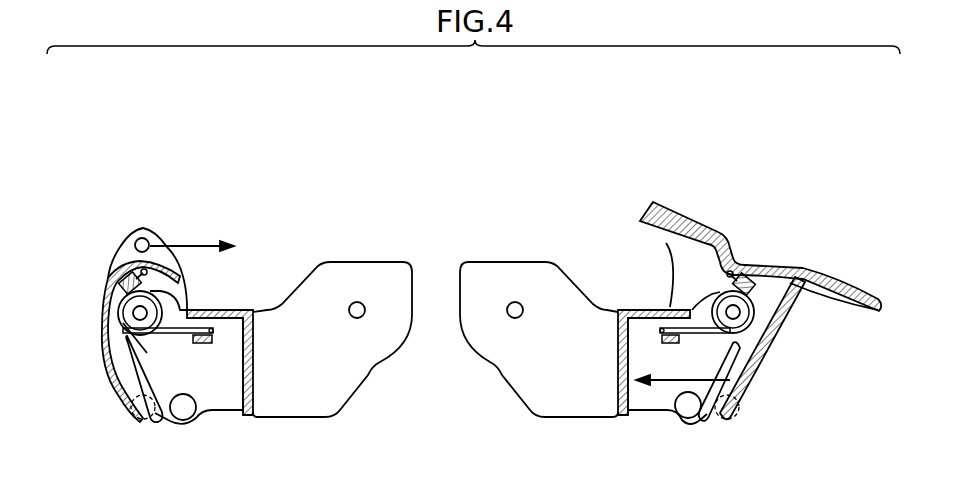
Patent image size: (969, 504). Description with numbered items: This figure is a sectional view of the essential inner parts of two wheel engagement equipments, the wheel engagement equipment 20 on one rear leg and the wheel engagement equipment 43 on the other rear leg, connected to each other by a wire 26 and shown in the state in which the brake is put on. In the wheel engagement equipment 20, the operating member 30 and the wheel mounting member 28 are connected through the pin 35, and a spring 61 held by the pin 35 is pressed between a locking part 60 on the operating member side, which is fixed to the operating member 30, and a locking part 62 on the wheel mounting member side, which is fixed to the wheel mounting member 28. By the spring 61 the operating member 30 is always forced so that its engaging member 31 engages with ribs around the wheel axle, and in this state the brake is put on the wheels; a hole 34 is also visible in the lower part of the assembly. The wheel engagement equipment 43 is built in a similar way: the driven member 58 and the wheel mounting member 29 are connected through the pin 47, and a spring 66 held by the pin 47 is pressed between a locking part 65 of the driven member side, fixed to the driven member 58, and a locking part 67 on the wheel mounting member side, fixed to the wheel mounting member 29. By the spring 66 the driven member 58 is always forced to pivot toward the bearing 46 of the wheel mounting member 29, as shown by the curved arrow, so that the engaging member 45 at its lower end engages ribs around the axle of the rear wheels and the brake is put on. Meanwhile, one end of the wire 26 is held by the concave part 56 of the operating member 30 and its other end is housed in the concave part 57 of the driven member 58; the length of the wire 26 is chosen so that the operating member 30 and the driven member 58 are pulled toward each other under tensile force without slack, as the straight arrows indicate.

The wheel engagement equipment 20 is at (816, 158).
The wire 26 is at (195, 242).
The wheel mounting member 28 is at (571, 395).
The wheel mounting member 29 is at (343, 373).
The operating member 30 is at (857, 282).
The engaging member 31 is at (695, 335).
The mounting hole 34 is at (688, 420).
The pin 35 is at (730, 307).
The wheel engagement equipment 43 is at (114, 158).
The engaging member 45 is at (188, 328).
The bearing 46 is at (181, 422).
The pin 47 is at (137, 321).
The concave part 56 is at (745, 376).
The concave part 57 is at (141, 238).
The driven member 58 is at (108, 375).
The locking part on the operating member side 60 is at (758, 293).
The spring 61 is at (757, 310).
The locking part on the wheel mounting member side 62 is at (660, 337).
The locking part of the driven member side 65 is at (118, 281).
The spring 66 is at (133, 313).
The locking part on the wheel mounting member side 67 is at (203, 345).